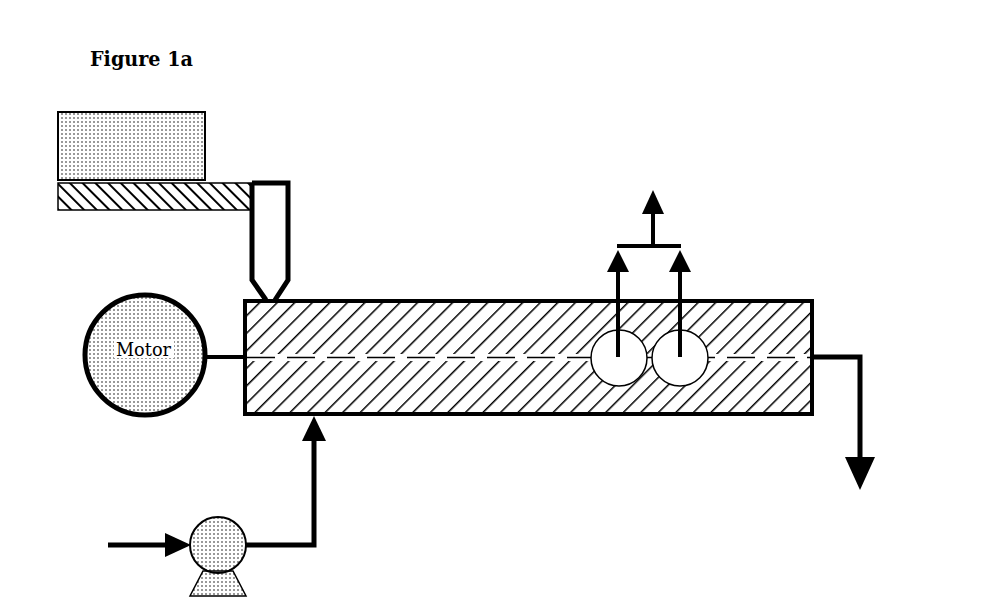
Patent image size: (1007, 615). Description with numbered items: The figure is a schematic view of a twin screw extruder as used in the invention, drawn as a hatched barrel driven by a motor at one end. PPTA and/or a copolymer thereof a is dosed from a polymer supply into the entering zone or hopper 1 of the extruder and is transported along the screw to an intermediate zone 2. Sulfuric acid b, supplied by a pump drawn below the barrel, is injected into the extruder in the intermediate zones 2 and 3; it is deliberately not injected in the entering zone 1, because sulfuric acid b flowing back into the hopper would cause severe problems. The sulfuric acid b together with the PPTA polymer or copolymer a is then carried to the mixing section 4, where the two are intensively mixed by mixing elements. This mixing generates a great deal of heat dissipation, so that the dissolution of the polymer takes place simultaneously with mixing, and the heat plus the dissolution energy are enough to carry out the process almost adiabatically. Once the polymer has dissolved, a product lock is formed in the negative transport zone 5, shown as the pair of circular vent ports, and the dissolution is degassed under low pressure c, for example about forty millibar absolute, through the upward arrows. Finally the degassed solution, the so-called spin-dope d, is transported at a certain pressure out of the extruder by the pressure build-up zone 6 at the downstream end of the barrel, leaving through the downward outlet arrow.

The PPTA polymer or copolymer a is at (205, 164).
The entering zone or hopper 1 is at (260, 240).
The intermediate zone 2 is at (312, 300).
The intermediate zone 3 is at (332, 395).
The mixing section 4 is at (497, 328).
The negative transport zone 5 is at (679, 413).
The pressure build-up zone 6 is at (808, 318).
The sulfuric acid b is at (246, 554).
The low pressure c is at (649, 258).
The spin-dope d is at (843, 444).